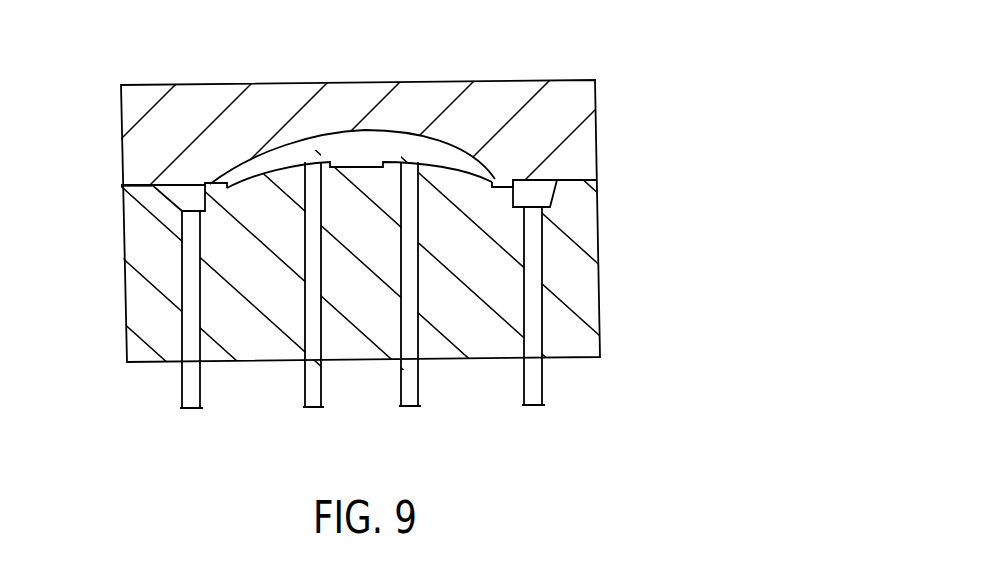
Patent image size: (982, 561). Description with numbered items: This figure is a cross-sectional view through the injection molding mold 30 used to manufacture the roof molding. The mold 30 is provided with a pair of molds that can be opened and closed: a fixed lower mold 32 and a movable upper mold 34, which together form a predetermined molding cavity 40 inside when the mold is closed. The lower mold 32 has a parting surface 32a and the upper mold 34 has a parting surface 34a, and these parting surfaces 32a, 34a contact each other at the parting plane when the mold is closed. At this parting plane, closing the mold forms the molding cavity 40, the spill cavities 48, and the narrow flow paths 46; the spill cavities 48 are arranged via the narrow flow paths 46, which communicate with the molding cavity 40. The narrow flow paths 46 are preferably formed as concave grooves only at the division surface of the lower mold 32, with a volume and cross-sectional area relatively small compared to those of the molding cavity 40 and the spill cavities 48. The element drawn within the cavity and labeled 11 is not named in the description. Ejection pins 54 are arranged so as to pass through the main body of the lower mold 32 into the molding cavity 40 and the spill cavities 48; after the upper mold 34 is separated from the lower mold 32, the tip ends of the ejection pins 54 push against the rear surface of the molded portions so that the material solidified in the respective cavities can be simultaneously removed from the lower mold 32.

The injection molding mold 30 is at (601, 60).
The lower mold 32 is at (573, 347).
The upper mold 34 is at (578, 107).
The parting surface 32a is at (123, 210).
The parting surface 34a is at (123, 210).
The molding cavity 40 is at (357, 150).
The molded membrane 11 is at (408, 148).
The narrow flow paths 46 is at (210, 183).
The spill cavities 48 is at (180, 203).
The ejection pins 54 is at (202, 396).